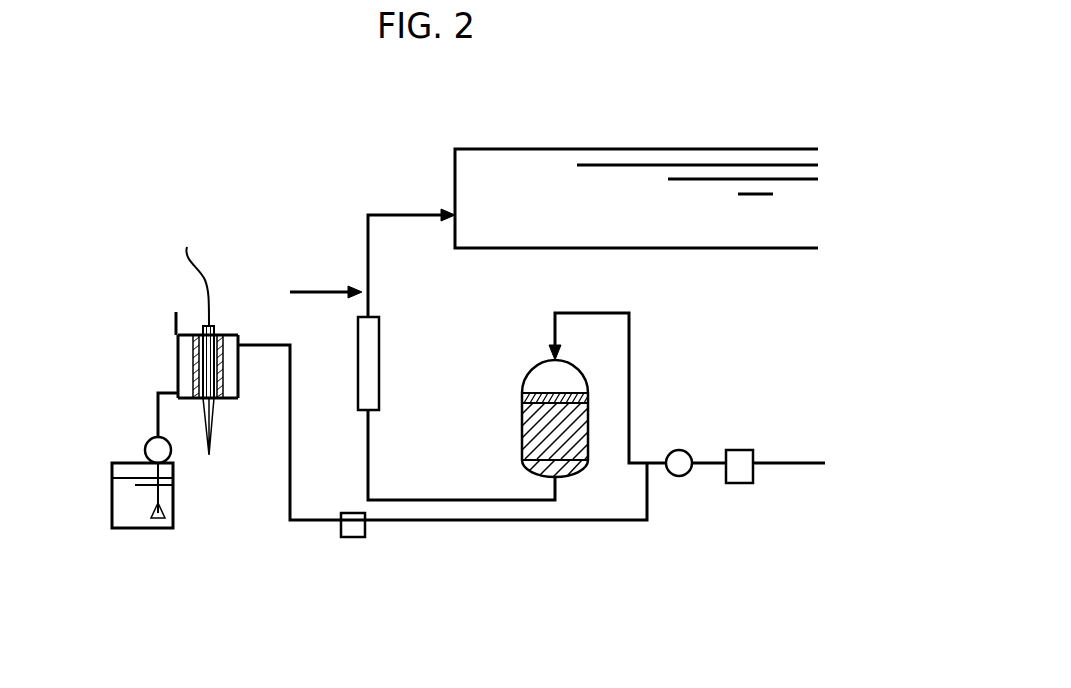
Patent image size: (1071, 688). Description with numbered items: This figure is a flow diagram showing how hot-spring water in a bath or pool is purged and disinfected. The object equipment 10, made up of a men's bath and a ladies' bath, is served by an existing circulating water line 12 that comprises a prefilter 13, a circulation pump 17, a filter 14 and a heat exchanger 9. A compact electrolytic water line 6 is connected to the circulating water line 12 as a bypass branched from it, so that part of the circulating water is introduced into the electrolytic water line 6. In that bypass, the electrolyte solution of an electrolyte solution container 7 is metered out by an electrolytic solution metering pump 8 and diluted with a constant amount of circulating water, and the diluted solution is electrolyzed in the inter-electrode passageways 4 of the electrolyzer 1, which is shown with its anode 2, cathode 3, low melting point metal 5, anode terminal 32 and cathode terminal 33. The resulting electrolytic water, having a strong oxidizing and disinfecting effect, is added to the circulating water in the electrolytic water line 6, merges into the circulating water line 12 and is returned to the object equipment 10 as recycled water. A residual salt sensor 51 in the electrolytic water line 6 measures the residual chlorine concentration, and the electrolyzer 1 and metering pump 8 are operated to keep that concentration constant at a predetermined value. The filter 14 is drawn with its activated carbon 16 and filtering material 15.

The electrolyzer 1 is at (178, 366).
The anode 2 is at (197, 399).
The cathode 3 is at (178, 340).
The electrolyzing passage 4 is at (238, 355).
The low melting point metal 5 is at (235, 469).
The electrolytic water line 6 is at (498, 559).
The electrolyte solution container 7 is at (138, 528).
The electrolytic solution metering pump 8 is at (145, 447).
The heat exchanger 9 is at (425, 324).
The object equipment 10 is at (585, 149).
The circulating water line 12 is at (368, 456).
The prefilter 13 is at (739, 450).
The filter 14 is at (552, 358).
The filtering material 15 is at (522, 428).
The activated carbon 16 is at (522, 398).
The circulation pump 17 is at (679, 476).
The anode terminal 32 is at (175, 293).
The cathode terminal 33 is at (176, 312).
The residual salt sensor 51 is at (353, 537).